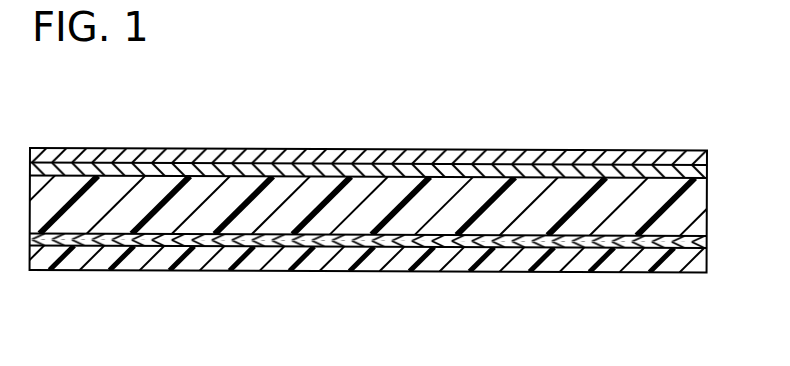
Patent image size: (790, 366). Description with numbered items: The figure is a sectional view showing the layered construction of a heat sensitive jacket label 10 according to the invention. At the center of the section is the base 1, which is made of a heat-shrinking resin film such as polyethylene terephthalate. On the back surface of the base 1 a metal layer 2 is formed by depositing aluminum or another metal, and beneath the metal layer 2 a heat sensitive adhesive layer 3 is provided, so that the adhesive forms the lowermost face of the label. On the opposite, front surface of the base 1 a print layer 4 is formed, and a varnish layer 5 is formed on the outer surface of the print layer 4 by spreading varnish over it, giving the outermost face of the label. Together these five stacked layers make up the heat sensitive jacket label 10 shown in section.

The heat sensitive jacket label 10 is at (569, 146).
The base 1 is at (686, 209).
The metal layer 2 is at (678, 246).
The heat sensitive adhesive layer 3 is at (550, 262).
The print layer 4 is at (653, 173).
The varnish layer 5 is at (492, 162).